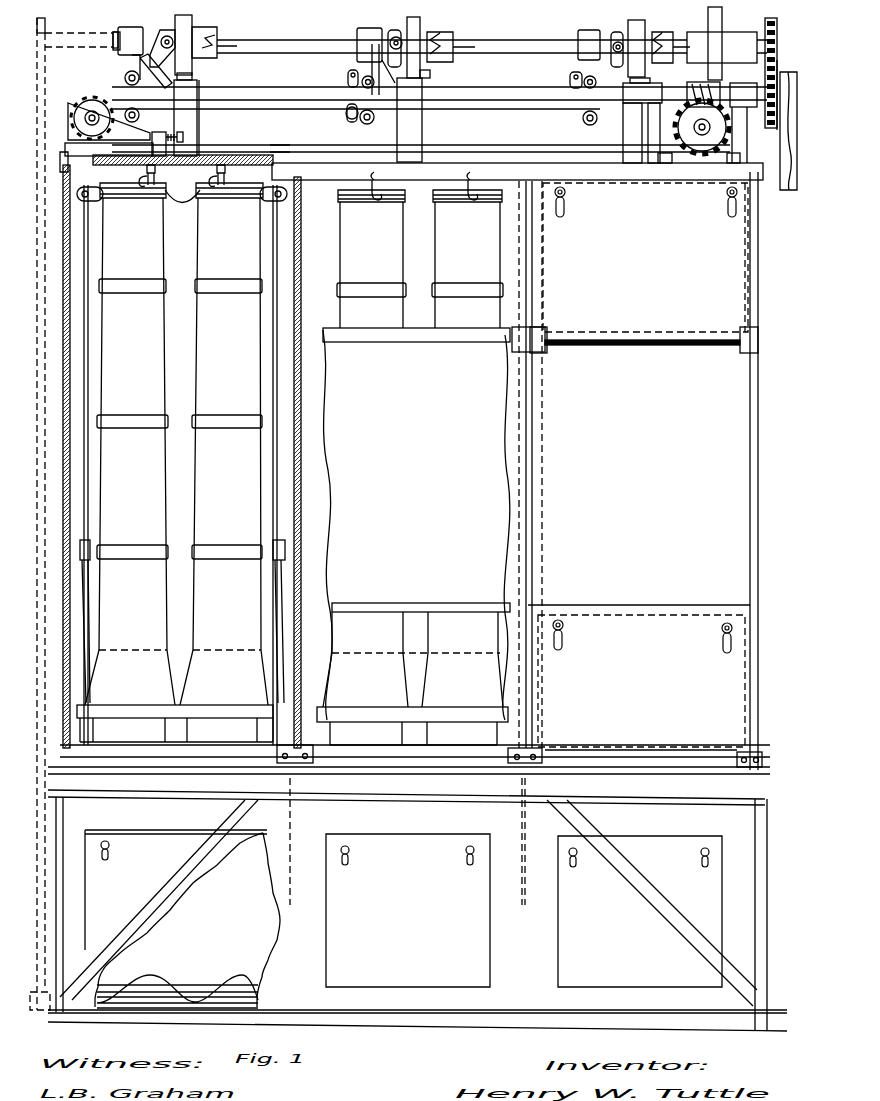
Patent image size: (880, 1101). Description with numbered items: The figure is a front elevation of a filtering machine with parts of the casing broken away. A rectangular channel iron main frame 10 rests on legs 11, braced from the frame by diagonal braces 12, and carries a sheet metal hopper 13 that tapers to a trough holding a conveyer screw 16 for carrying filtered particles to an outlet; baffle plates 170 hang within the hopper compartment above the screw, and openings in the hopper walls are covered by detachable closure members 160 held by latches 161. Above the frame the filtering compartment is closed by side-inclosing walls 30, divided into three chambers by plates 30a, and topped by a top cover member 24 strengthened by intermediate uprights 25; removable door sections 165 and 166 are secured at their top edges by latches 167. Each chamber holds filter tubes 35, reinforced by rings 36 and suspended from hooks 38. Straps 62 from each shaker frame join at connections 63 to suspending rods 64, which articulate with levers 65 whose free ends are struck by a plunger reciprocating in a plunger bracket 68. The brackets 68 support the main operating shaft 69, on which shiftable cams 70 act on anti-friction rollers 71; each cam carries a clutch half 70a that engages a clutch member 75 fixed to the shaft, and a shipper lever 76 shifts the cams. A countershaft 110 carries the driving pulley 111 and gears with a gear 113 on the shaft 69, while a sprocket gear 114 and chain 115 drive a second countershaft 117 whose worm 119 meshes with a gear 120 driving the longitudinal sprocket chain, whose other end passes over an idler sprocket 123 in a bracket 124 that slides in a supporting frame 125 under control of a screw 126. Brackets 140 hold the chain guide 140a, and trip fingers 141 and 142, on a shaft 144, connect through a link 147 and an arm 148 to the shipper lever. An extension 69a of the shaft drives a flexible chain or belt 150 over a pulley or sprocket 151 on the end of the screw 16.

The main frame 10 is at (131, 783).
The legs 11 is at (58, 913).
The diagonal braces 12 is at (157, 890).
The hopper 13 is at (515, 985).
The conveyer screw 16 is at (196, 992).
The top cover member 24 is at (65, 160).
The intermediate uprights 25 is at (305, 715).
The side-inclosing walls 30 is at (62, 328).
The division plates 30a is at (296, 390).
The filter tube 35 is at (125, 372).
The reinforcing rings 36 is at (131, 288).
The hook 38 is at (146, 178).
The straps 62 is at (88, 610).
The strap connection 63 is at (92, 552).
The suspending and operating rods 64 is at (90, 251).
The levers 65 is at (102, 184).
The plunger bracket 68 is at (128, 30).
The main operating shaft 69 is at (505, 47).
The shaft extension 69a is at (86, 36).
The shiftable cams 70 is at (186, 24).
The clutch half 70a is at (205, 32).
The anti-friction rollers 71 is at (195, 75).
The clutch member 75 is at (215, 29).
The shipper lever 76 is at (165, 34).
The countershaft 110 is at (757, 140).
The driving pulley 111 is at (786, 198).
The gear 113 is at (714, 33).
The sprocket gear 114 is at (766, 28).
The chain 115 is at (778, 67).
The countershaft 117 is at (660, 163).
The worm 119 is at (696, 87).
The gear 120 is at (688, 165).
The idler sprocket 123 is at (88, 112).
The bracket 124 is at (90, 138).
The supporting frame 125 is at (131, 150).
The screw 126 is at (185, 137).
The chain guide brackets 140 is at (199, 121).
The chain guide 140a is at (279, 143).
The trip finger 141 is at (138, 115).
The trip finger 142 is at (123, 64).
The trip finger shaft 144 is at (367, 86).
The link 147 is at (300, 76).
The arm 148 is at (360, 120).
The flexible chain or belt 150 is at (48, 72).
The pulley or sprocket 151 is at (40, 1012).
The closure members 160 is at (166, 815).
The latches 161 is at (108, 855).
The door section 165 is at (649, 320).
The door section 166 is at (627, 696).
The latches 167 is at (566, 206).
The baffle plates 170 is at (292, 820).